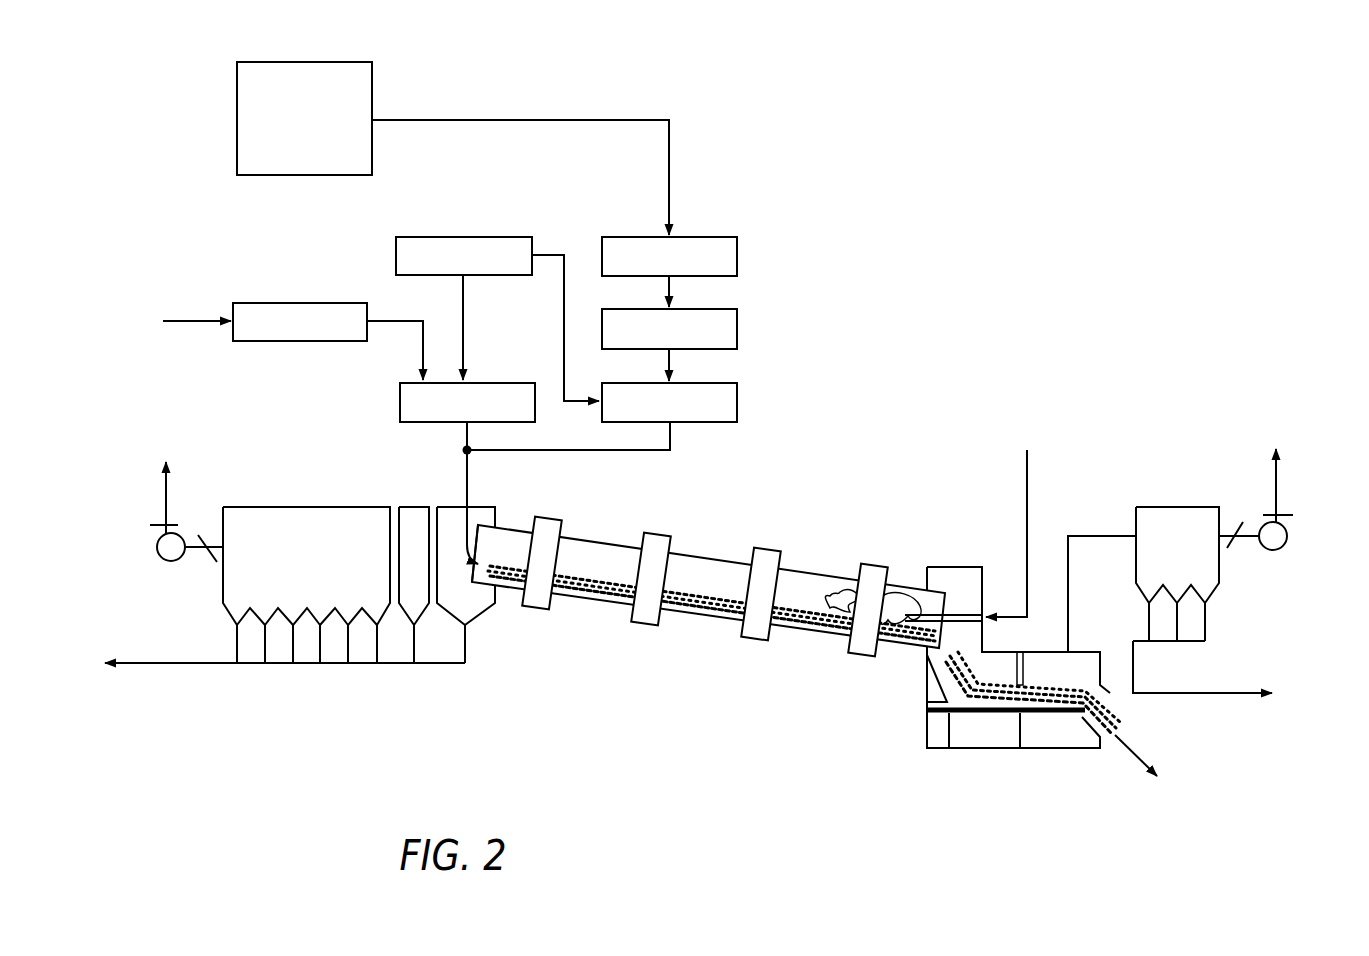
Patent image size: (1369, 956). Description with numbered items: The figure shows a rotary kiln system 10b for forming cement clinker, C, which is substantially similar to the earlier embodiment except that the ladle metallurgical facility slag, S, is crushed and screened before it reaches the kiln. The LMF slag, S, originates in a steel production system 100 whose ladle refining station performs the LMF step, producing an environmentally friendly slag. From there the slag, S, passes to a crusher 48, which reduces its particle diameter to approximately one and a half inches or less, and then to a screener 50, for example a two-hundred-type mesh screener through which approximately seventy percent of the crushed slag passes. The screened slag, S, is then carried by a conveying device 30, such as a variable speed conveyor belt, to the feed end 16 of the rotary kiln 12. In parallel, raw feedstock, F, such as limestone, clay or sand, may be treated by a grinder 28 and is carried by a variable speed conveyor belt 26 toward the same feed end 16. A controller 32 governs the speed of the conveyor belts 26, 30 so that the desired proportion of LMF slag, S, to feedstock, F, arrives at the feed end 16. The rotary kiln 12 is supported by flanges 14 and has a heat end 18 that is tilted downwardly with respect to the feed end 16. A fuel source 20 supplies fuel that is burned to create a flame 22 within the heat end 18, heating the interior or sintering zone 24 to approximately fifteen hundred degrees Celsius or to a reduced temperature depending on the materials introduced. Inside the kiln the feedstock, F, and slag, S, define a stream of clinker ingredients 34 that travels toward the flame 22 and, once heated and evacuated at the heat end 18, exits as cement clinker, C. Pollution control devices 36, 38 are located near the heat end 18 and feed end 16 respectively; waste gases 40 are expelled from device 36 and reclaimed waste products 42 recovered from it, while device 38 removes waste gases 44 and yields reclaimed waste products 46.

The rotary kiln system 10b is at (1122, 153).
The steel production system 100 is at (237, 70).
The LMF slag S is at (647, 119).
The controller 32 is at (396, 245).
The crusher 48 is at (737, 246).
The screener 50 is at (737, 319).
The conveying device 30 is at (737, 394).
The grinder 28 is at (233, 305).
The feedstock F is at (176, 323).
The variable speed conveyor belt 26 is at (400, 395).
The pollution control device 38 is at (448, 507).
The waste gases 44 is at (163, 493).
The reclaimed waste products 46 is at (150, 663).
The rotary kiln 12 is at (814, 617).
The stream of clinker ingredients 34 is at (591, 562).
The feed end 16 is at (508, 517).
The sintering zone 24 is at (801, 592).
The flanges 14 is at (535, 606).
The flame 22 is at (907, 622).
The heat end 18 is at (904, 577).
The fuel source 20 is at (1027, 462).
The cement clinker C is at (1137, 770).
The pollution control device 36 is at (1150, 507).
The reclaimed waste products 42 is at (1230, 694).
The waste gases 40 is at (1281, 472).